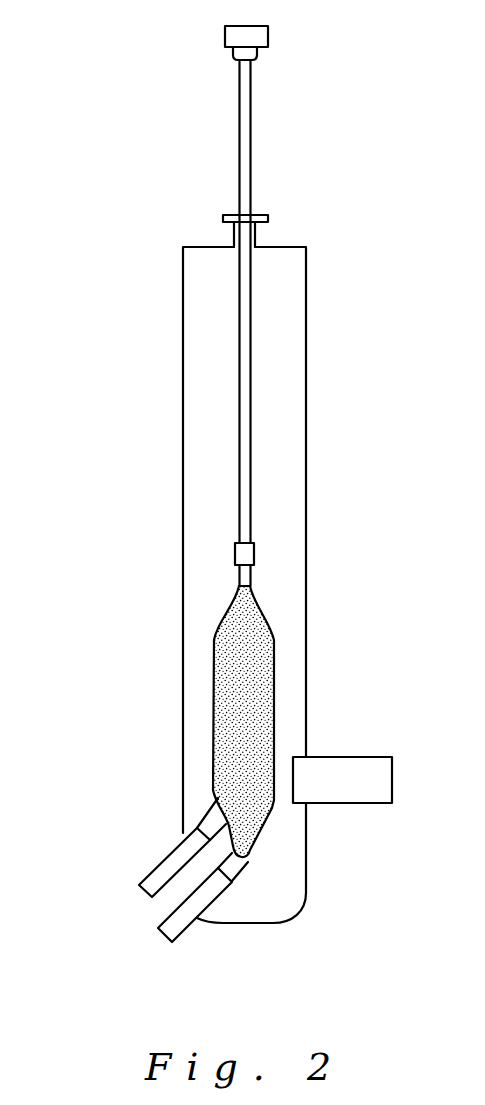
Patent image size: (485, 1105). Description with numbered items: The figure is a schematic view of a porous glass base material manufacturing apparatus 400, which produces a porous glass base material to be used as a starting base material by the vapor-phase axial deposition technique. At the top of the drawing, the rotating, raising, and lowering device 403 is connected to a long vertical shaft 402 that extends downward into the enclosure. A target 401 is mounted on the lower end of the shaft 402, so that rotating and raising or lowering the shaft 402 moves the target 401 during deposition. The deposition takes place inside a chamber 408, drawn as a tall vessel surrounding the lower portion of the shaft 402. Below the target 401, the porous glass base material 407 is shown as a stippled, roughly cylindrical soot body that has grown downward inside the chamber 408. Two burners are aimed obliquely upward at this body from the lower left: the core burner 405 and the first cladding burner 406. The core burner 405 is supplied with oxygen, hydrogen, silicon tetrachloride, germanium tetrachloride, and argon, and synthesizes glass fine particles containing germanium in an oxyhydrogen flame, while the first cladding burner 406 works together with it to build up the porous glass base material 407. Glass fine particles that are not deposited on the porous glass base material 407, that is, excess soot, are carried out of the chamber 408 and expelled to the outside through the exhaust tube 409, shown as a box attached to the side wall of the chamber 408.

The porous glass base material manufacturing apparatus 400 is at (100, 31).
The target 401 is at (253, 577).
The shaft 402 is at (252, 163).
The rotating, raising, and lowering device 403 is at (250, 37).
The core burner 405 is at (160, 933).
The first cladding burner 406 is at (147, 901).
The porous glass base material 407 is at (268, 713).
The chamber 408 is at (306, 660).
The exhaust tube 409 is at (338, 762).